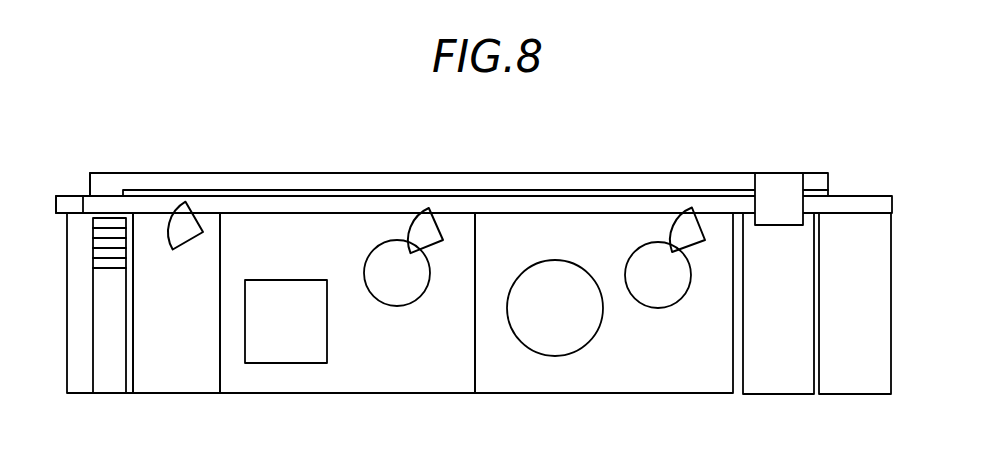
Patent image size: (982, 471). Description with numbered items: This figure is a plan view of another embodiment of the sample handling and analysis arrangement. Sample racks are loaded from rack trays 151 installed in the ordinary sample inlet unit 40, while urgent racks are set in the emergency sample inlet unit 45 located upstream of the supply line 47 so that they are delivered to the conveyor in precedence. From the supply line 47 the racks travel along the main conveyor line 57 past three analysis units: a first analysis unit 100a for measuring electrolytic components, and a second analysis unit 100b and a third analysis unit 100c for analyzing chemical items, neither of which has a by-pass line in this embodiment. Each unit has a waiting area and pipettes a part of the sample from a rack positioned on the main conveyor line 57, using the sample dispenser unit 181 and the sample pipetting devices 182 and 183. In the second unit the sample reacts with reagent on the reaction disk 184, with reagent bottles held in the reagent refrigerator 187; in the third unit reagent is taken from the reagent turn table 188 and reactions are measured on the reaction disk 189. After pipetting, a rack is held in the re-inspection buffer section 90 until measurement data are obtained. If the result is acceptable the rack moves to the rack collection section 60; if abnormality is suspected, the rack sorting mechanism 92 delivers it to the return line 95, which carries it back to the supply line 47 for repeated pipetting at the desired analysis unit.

The ordinary sample inlet unit 40 is at (75, 394).
The emergency sample inlet unit 45 is at (72, 203).
The supply line 47 is at (105, 202).
The main conveyor line 57 is at (338, 203).
The rack collection section 60 is at (849, 397).
The re-inspection buffer section 90 is at (772, 397).
The rack sorting mechanism 92 is at (780, 185).
The return line 95 is at (580, 180).
The first analysis unit 100a is at (187, 394).
The second analysis unit 100b is at (395, 395).
The third analysis unit 100c is at (600, 395).
The rack tray 151 is at (110, 380).
The sample dispenser unit 181 is at (190, 252).
The sample pipetting device 182 is at (433, 247).
The sample pipetting device 183 is at (695, 247).
The reaction disk 184 is at (388, 307).
The reagent refrigerator 187 is at (268, 278).
The reagent turn table 188 is at (557, 260).
The reaction disk 189 is at (652, 308).